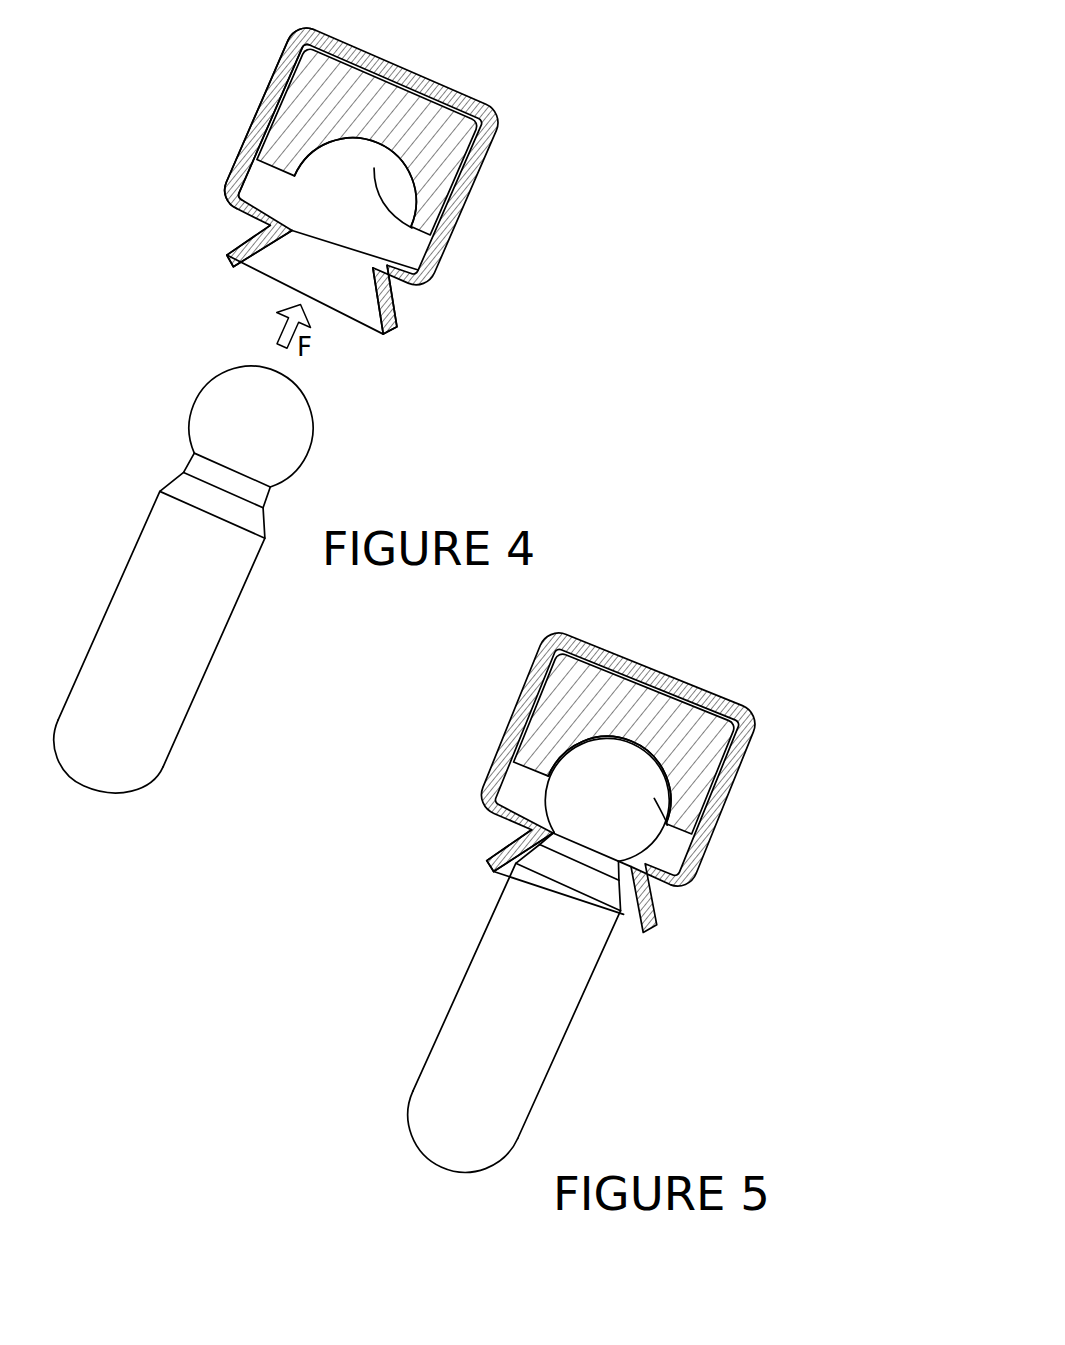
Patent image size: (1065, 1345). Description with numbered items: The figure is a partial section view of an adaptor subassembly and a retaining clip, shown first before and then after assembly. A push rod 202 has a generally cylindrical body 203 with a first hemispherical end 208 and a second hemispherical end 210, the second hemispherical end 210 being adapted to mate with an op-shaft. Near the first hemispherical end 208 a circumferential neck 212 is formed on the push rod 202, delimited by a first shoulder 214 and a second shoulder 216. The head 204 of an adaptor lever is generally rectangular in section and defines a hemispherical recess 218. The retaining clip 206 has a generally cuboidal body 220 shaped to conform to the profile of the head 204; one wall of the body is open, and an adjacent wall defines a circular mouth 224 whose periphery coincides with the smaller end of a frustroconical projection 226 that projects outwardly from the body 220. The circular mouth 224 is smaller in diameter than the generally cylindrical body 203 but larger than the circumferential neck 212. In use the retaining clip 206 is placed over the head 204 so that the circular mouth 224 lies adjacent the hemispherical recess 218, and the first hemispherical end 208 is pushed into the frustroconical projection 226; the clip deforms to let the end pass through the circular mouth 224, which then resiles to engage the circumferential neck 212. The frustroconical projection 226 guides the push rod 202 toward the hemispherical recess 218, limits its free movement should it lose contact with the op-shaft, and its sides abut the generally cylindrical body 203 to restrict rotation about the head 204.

In FIG. 4, the push rod 202 is at (210, 597).
In FIG. 5, the push rod 202 is at (499, 956).
In FIG. 4, the generally cylindrical body 203 is at (151, 669).
In FIG. 5, the generally cylindrical body 203 is at (465, 1029).
In FIG. 4, the head 204 is at (450, 135).
In FIG. 5, the head 204 is at (700, 728).
In FIG. 4, the retaining clip 206 is at (346, 204).
In FIG. 5, the retaining clip 206 is at (587, 785).
In FIG. 4, the first hemispherical end 208 is at (213, 420).
In FIG. 5, the first hemispherical end 208 is at (610, 861).
In FIG. 4, the second hemispherical end 210 is at (87, 777).
In FIG. 5, the second hemispherical end 210 is at (443, 1160).
In FIG. 4, the circumferential neck 212 is at (248, 490).
In FIG. 5, the circumferential neck 212 is at (583, 854).
In FIG. 4, the first shoulder 214 is at (183, 475).
In FIG. 5, the first shoulder 214 is at (563, 860).
In FIG. 4, the second shoulder 216 is at (280, 428).
In FIG. 5, the second shoulder 216 is at (583, 852).
In FIG. 4, the hemispherical recess 218 is at (428, 258).
In FIG. 5, the hemispherical recess 218 is at (677, 802).
In FIG. 4, the generally cuboidal body 220 is at (262, 103).
In FIG. 4, the circular mouth 224 is at (318, 246).
In FIG. 4, the frustroconical projection 226 is at (380, 307).
In FIG. 5, the frustroconical projection 226 is at (487, 850).